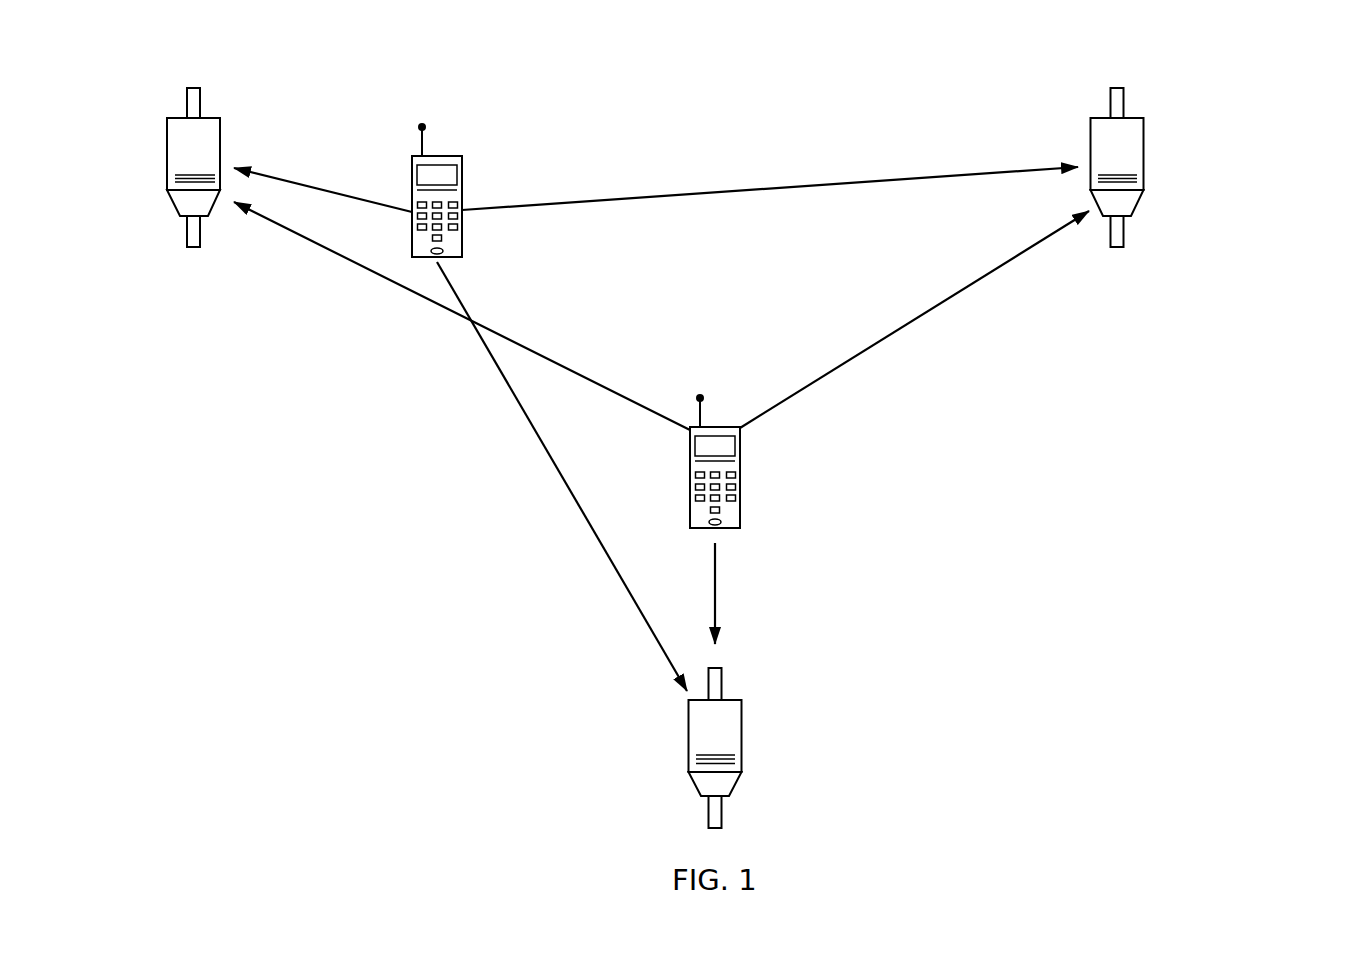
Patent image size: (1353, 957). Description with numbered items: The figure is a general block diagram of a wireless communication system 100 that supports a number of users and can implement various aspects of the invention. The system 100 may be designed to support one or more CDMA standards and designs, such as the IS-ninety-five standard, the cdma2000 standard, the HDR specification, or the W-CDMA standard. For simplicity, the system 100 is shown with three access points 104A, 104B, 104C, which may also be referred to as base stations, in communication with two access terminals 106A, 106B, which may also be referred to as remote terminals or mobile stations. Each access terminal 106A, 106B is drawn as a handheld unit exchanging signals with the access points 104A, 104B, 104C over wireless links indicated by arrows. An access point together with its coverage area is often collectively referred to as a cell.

The wireless communication system 100 is at (1266, 86).
The access point 104A is at (210, 115).
The access point 104B is at (1132, 115).
The access point 104C is at (728, 698).
The access terminal 106A is at (437, 155).
The access terminal 106B is at (727, 528).